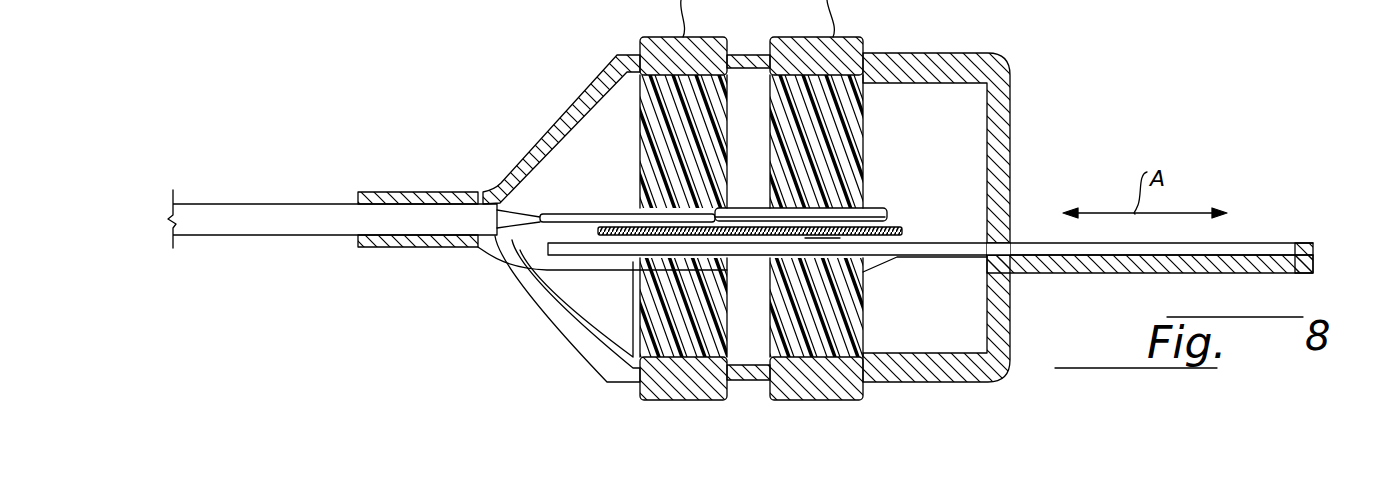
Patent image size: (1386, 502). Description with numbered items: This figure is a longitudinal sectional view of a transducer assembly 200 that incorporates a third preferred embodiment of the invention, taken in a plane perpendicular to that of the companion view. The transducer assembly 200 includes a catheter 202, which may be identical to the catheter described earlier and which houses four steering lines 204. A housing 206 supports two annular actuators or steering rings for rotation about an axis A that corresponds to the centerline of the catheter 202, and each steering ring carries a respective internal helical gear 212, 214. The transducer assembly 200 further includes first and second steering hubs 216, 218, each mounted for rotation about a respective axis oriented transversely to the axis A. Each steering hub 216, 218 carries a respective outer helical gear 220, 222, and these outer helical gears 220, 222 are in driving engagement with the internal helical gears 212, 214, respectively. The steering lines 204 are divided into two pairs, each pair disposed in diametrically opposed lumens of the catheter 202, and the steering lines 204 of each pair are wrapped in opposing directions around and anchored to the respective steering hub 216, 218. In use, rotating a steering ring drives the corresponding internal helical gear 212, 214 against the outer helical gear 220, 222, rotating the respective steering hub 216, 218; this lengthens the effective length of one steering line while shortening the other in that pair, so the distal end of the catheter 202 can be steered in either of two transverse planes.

The transducer assembly 200 is at (528, 113).
The catheter 202 is at (257, 210).
The steering lines 204 is at (509, 203).
The housing 206 is at (978, 65).
The internal helical gear 212 is at (642, 124).
The internal helical gear 214 is at (863, 105).
The first steering hub 216 is at (612, 213).
The second steering hub 218 is at (887, 217).
The outer helical gear 220 is at (596, 232).
The outer helical gear 222 is at (903, 234).